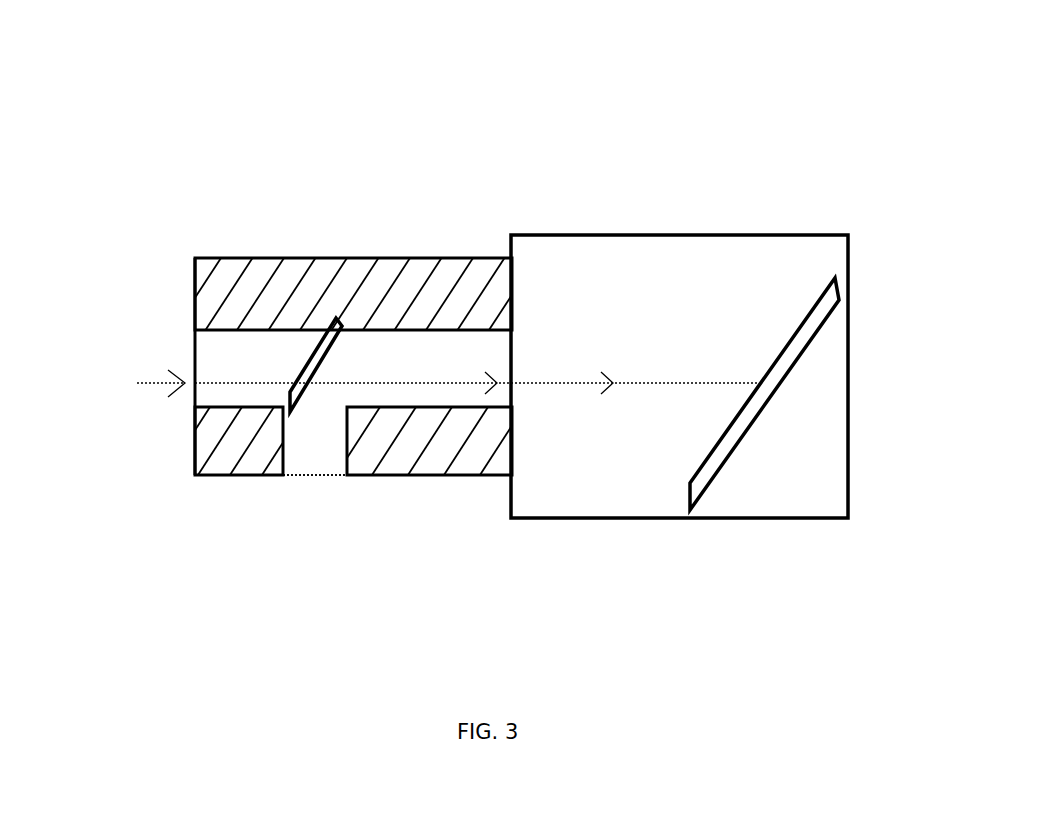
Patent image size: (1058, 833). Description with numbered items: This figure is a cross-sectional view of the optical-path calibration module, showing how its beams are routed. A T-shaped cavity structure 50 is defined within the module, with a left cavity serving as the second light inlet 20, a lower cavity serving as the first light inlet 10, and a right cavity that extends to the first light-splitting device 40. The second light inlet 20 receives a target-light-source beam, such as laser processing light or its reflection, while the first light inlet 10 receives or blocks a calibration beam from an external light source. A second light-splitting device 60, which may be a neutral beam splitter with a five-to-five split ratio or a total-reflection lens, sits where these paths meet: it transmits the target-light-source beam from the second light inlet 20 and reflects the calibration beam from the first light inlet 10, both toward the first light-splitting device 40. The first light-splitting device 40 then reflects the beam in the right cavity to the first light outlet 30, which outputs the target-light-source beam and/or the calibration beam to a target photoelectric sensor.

The first light inlet 10 is at (311, 383).
The second light inlet 20 is at (406, 387).
The first light outlet 30 is at (758, 383).
The first light-splitting device 40 is at (717, 457).
The T-shaped cavity structure 50 is at (443, 293).
The second light-splitting device 60 is at (310, 347).